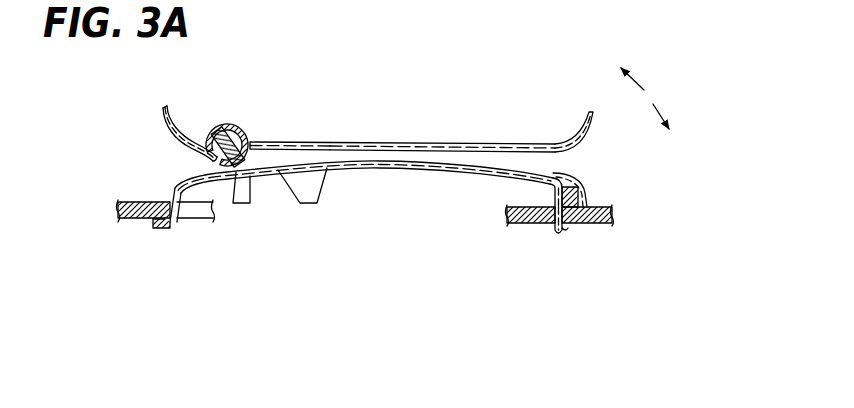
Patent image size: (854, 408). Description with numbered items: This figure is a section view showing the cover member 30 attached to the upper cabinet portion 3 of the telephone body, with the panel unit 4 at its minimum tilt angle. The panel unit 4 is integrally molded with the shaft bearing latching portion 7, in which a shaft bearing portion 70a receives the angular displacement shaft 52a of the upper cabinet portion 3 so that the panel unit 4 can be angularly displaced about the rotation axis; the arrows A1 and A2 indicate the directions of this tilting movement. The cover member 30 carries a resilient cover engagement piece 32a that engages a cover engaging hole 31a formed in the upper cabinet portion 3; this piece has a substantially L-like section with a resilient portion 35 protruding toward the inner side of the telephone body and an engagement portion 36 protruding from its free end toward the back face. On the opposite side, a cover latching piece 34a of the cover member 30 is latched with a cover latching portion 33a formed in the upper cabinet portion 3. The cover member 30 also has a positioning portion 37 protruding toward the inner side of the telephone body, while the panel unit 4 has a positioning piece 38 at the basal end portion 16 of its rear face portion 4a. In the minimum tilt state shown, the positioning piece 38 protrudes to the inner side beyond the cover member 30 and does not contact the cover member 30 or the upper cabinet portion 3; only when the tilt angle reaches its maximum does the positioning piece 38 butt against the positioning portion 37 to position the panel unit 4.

The upper cabinet portion 3 is at (605, 194).
The panel unit 4 is at (421, 100).
The rear face portion 4a is at (533, 145).
The shaft bearing latching portion 7 is at (199, 120).
The basal end portion 16 is at (183, 133).
The cover member 30 is at (415, 170).
The cover engaging hole 31a is at (542, 224).
The cover engagement piece 32a is at (563, 248).
The cover latching portion 33a is at (147, 222).
The cover latching piece 34a is at (173, 228).
The resilient portion 35 is at (556, 197).
The engagement portion 36 is at (565, 226).
The positioning portion 37 is at (316, 195).
The positioning piece 38 is at (242, 204).
The angular displacement shaft 52a is at (235, 122).
The shaft bearing portion 70a is at (250, 136).
The direction A1 is at (641, 86).
The direction A2 is at (662, 118).